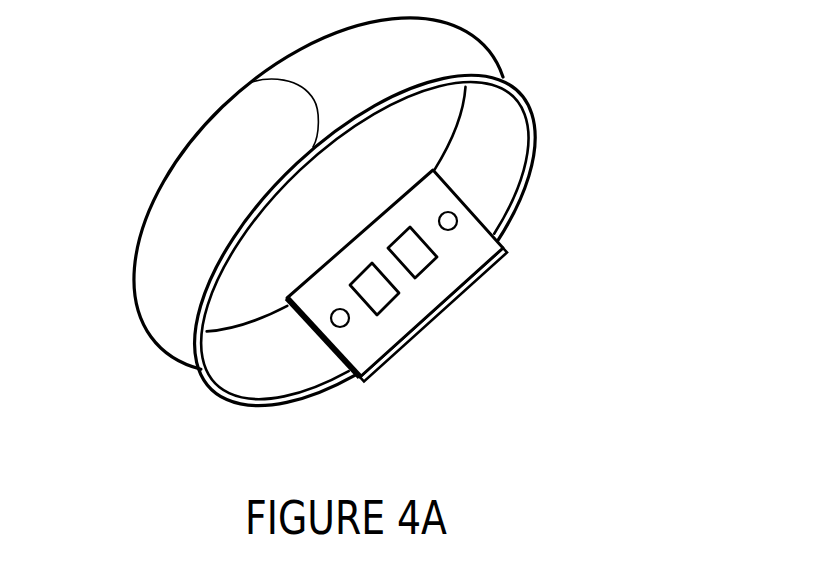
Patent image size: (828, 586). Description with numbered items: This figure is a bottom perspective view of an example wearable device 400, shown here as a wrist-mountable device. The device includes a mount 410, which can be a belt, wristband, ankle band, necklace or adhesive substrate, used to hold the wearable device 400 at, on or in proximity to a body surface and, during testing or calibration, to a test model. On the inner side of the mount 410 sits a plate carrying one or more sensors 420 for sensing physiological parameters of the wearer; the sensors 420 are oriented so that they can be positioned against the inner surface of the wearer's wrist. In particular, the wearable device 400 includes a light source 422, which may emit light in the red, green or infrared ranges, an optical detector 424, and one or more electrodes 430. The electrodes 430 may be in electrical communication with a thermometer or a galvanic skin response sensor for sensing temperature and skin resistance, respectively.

The wearable device 400 is at (380, 223).
The mount 410 is at (163, 247).
The sensors 420 is at (427, 299).
The light source 422 is at (378, 298).
The optical detector 424 is at (424, 253).
The electrodes 430 is at (439, 217).